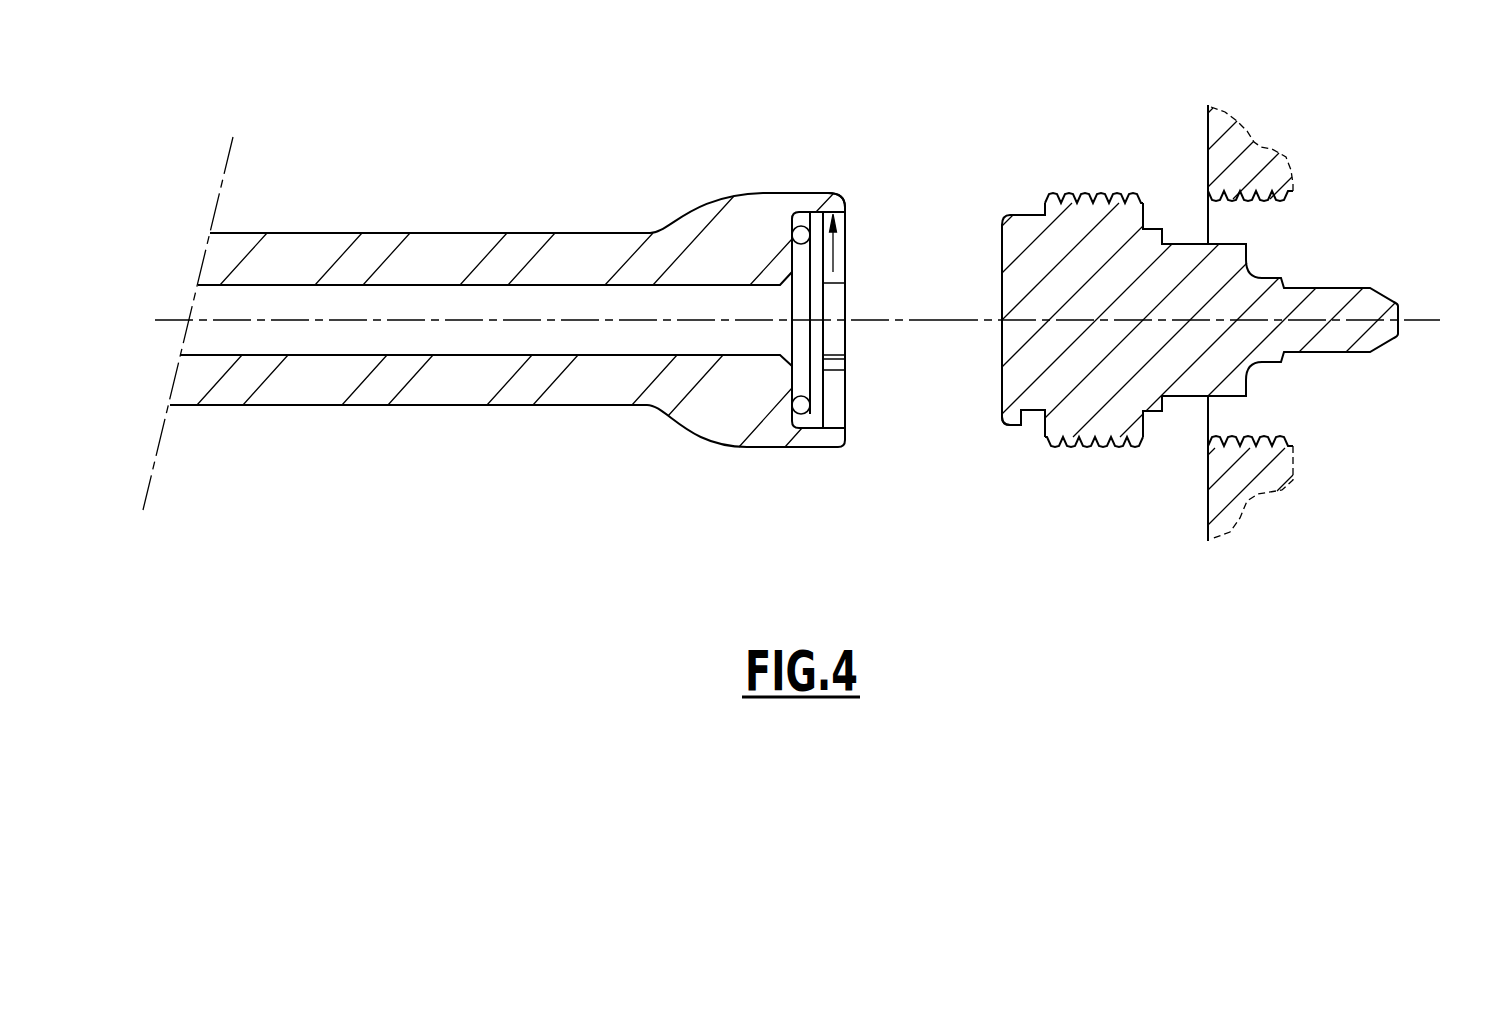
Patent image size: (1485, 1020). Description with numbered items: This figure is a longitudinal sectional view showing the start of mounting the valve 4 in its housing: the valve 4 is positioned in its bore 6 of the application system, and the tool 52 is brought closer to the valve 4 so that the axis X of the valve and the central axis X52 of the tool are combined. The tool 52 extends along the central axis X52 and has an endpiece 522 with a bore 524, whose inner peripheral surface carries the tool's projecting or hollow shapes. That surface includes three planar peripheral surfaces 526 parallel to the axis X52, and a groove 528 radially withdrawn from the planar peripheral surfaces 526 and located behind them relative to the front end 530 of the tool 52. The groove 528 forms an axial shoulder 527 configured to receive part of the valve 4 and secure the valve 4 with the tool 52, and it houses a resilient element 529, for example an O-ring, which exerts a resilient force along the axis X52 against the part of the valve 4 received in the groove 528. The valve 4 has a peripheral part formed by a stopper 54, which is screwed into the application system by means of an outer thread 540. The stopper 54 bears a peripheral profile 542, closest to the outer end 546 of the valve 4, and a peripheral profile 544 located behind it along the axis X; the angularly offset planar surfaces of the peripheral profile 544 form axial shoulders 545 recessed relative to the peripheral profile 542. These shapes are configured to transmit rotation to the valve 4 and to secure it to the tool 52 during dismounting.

The valve 4 is at (1160, 156).
The bore 6 is at (1273, 219).
The tool 52 is at (444, 233).
The stopper 54 is at (1027, 257).
The endpiece 522 is at (797, 448).
The bore 524 is at (849, 301).
The planar peripheral surfaces 526 is at (843, 272).
The axial shoulder 527 is at (800, 334).
The groove 528 is at (820, 399).
The resilient element 529 is at (790, 213).
The front end 530 is at (863, 192).
The outer thread 540 is at (1070, 172).
The peripheral profile 542 is at (1006, 442).
The peripheral profile 544 is at (1039, 440).
The axial shoulders 545 is at (1057, 395).
The outer end 546 is at (982, 379).
The central axis X52 is at (520, 323).
The axis X is at (1205, 308).